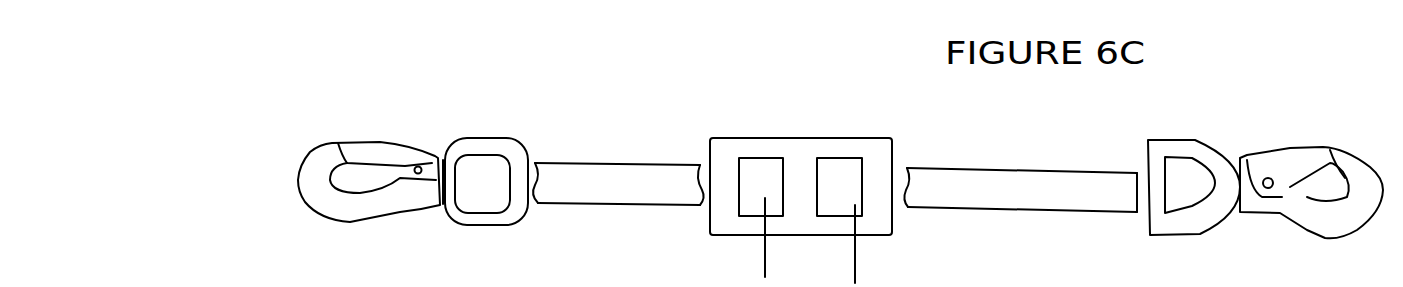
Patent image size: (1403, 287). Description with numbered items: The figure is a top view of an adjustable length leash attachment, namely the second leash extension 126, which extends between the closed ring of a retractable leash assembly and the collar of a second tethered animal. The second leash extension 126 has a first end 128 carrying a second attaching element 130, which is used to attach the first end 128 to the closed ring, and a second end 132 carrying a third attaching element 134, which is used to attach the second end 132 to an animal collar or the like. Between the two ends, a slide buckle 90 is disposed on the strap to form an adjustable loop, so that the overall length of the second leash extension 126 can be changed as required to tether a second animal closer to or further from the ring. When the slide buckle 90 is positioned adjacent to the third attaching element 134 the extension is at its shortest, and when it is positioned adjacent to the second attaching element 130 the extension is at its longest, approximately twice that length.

The second leash extension 126 is at (210, 186).
The third attaching element 134 is at (435, 137).
The second end 132 is at (552, 163).
The slide buckle 90 is at (803, 150).
The first end 128 is at (1125, 192).
The second attaching element 130 is at (1268, 170).